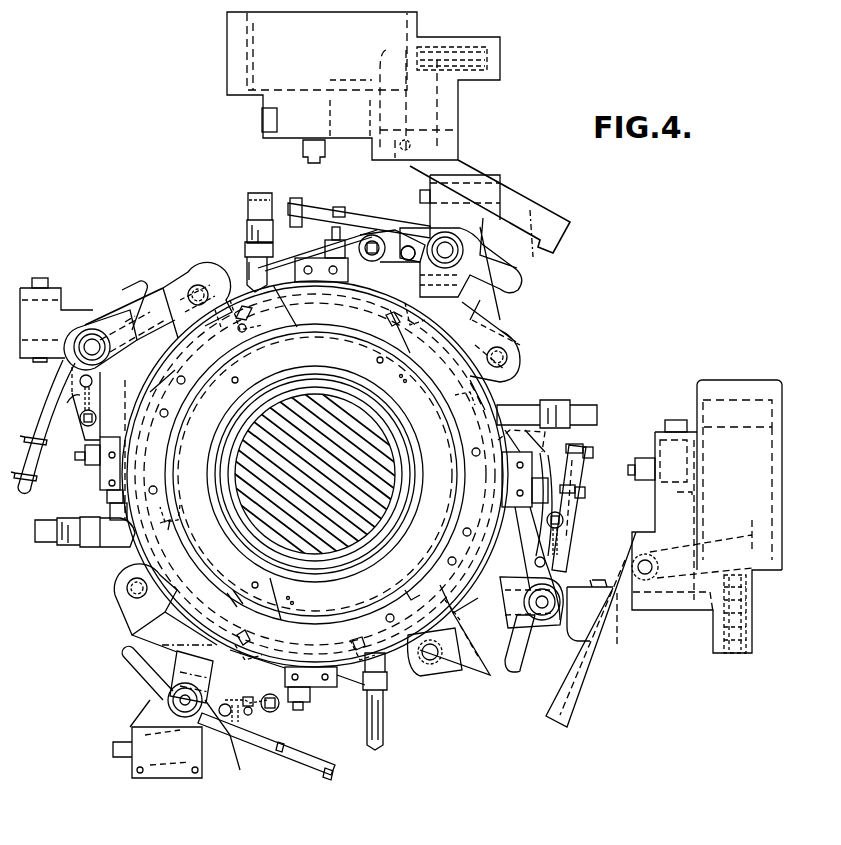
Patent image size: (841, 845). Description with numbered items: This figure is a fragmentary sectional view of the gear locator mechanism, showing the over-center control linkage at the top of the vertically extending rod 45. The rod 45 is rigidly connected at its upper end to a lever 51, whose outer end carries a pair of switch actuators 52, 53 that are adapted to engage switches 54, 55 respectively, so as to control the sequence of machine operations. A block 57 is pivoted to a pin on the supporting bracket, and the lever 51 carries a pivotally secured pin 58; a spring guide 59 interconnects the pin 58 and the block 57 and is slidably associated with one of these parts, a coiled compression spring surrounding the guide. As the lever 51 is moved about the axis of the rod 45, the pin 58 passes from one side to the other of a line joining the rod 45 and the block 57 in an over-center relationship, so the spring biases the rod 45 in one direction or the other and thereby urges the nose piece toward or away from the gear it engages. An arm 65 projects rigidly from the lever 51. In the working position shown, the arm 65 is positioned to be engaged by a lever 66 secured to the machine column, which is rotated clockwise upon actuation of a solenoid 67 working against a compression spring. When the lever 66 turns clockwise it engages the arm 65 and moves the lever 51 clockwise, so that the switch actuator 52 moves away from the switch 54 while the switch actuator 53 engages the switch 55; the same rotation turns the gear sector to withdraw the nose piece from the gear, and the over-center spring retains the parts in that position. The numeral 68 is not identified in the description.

The rod 45 is at (183, 699).
The lever 51 is at (303, 765).
The switch actuator 52 is at (580, 496).
The switch actuator 53 is at (590, 452).
The switch 54 is at (543, 467).
The switch 55 is at (646, 482).
The block 57 is at (276, 708).
The pin 58 is at (225, 716).
The spring guide 59 is at (250, 715).
The arm 65 is at (513, 670).
The lever 66 is at (587, 692).
The solenoid 67 is at (730, 437).
The bolt 68 is at (752, 630).